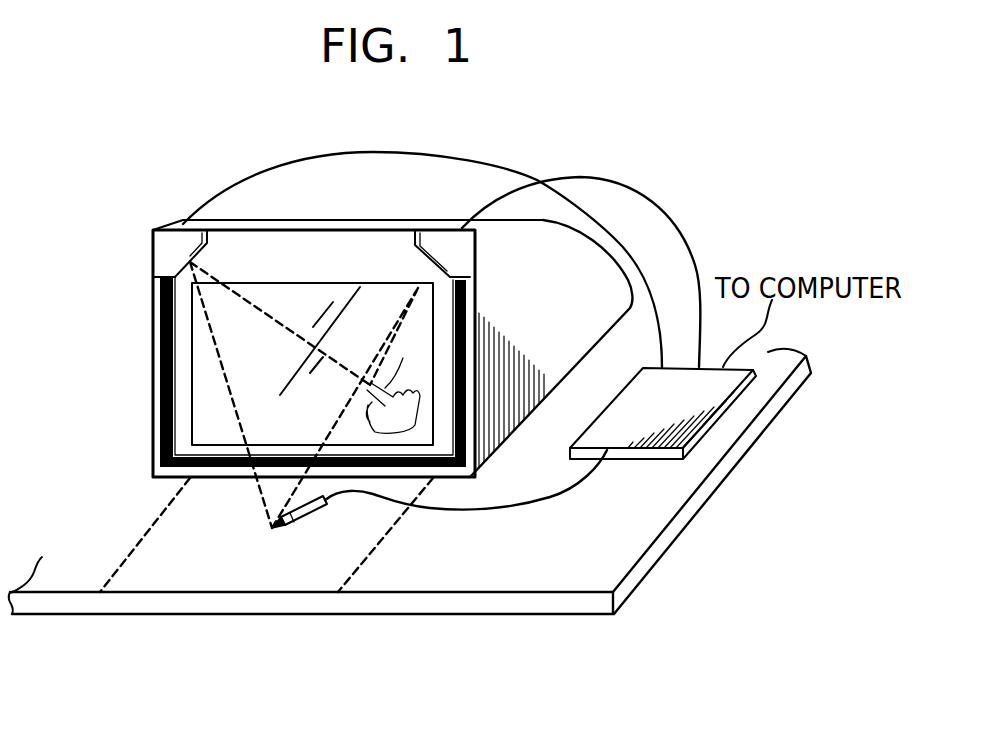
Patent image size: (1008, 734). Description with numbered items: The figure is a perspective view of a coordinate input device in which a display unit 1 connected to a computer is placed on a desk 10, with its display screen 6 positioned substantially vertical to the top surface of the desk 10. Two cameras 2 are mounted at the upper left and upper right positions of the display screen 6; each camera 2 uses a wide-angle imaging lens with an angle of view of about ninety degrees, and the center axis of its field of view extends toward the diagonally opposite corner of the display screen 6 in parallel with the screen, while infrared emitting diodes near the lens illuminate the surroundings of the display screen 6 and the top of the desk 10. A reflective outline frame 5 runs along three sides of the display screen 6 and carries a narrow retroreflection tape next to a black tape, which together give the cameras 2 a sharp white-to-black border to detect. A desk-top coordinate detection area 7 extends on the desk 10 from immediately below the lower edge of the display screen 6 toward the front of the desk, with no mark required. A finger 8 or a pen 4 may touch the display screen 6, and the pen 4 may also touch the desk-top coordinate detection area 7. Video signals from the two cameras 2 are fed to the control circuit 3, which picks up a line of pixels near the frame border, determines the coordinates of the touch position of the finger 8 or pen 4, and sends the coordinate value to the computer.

The display unit 1 is at (578, 248).
The camera 2 is at (167, 255).
The control circuit 3 is at (693, 407).
The pen 4 is at (300, 520).
The reflective outline frame 5 is at (155, 337).
The display screen 6 is at (241, 359).
The desk-top coordinate detection area 7 is at (180, 520).
The finger 8 is at (395, 386).
The desk 10 is at (588, 552).